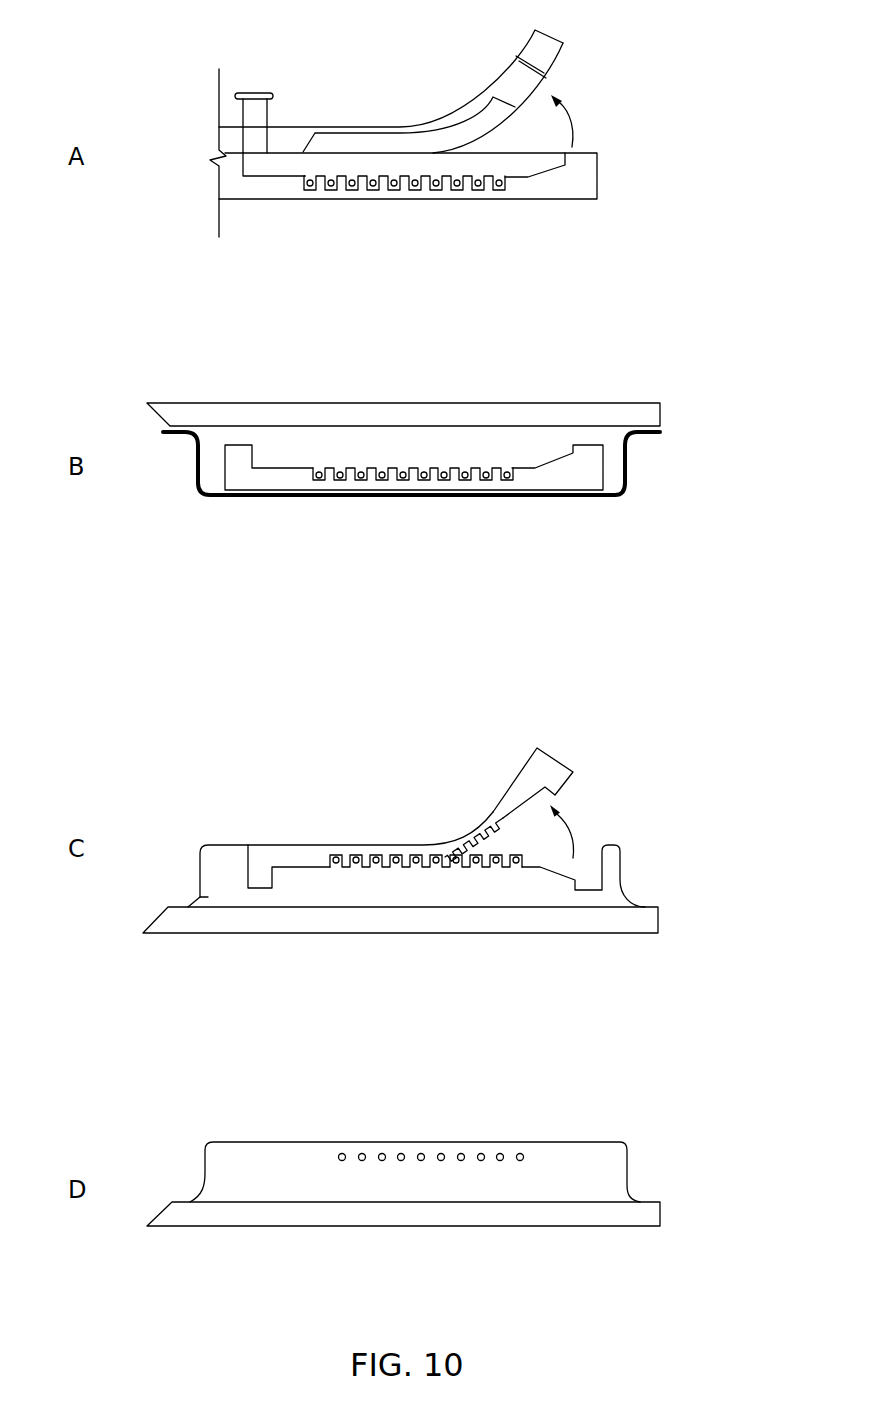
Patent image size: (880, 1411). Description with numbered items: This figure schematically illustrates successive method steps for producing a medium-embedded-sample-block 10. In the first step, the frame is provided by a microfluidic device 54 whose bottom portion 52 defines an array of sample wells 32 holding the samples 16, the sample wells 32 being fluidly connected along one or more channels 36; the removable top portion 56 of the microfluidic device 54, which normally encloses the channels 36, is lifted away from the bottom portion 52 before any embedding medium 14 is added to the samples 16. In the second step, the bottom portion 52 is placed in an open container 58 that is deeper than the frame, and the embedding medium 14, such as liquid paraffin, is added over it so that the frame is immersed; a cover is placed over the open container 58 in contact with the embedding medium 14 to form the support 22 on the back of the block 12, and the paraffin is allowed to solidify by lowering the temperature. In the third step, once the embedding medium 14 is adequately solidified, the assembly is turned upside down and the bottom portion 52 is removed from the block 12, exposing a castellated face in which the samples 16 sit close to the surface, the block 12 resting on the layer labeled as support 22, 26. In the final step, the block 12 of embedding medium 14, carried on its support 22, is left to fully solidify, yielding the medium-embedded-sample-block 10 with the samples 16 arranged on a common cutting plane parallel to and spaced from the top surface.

The medium-embedded-sample-block 10 is at (605, 1153).
The block 12 is at (212, 865).
The embedding medium 14 is at (202, 898).
The samples 16 is at (332, 188).
The support 22 is at (448, 913).
The base plate 26 is at (642, 918).
The sample wells 32 is at (373, 190).
The channels 36 is at (278, 163).
The bottom portion 52 is at (580, 180).
The microfluidic device 54 is at (668, 72).
The top portion 56 is at (547, 42).
The open container 58 is at (628, 460).